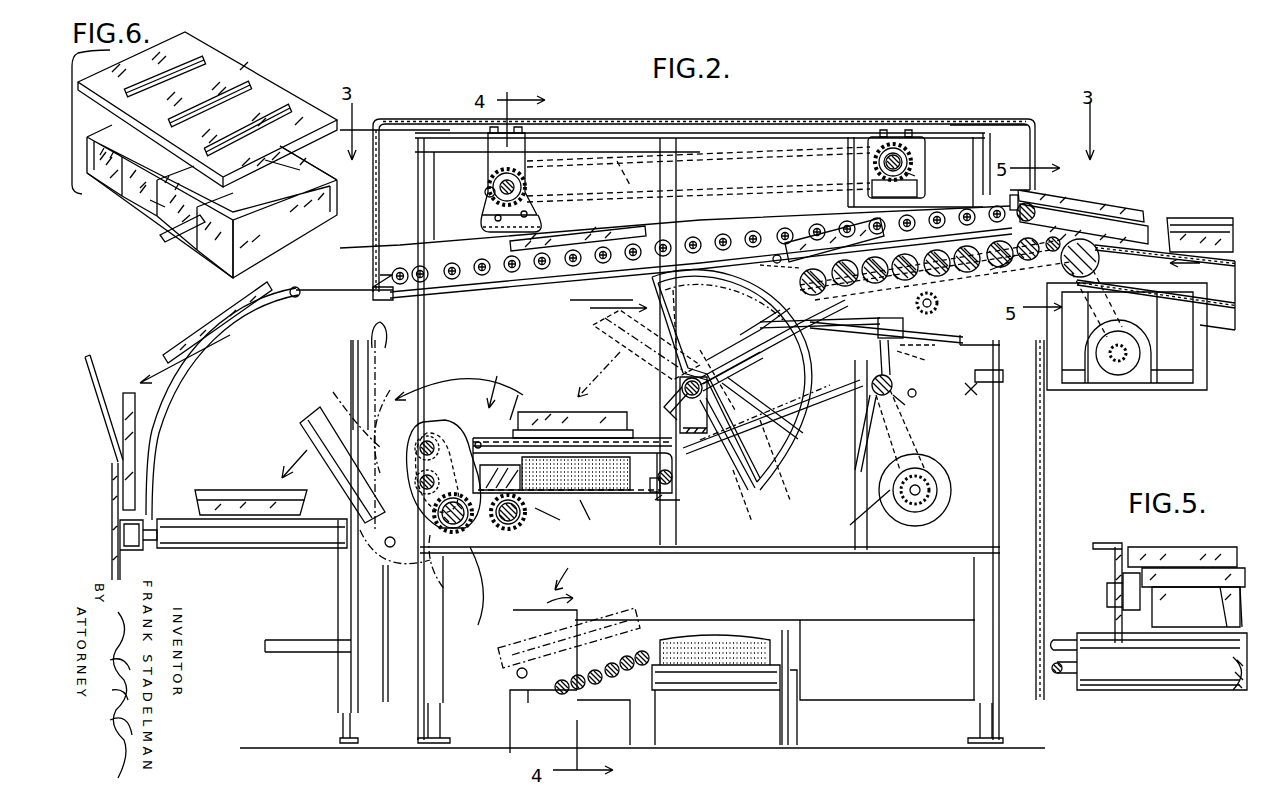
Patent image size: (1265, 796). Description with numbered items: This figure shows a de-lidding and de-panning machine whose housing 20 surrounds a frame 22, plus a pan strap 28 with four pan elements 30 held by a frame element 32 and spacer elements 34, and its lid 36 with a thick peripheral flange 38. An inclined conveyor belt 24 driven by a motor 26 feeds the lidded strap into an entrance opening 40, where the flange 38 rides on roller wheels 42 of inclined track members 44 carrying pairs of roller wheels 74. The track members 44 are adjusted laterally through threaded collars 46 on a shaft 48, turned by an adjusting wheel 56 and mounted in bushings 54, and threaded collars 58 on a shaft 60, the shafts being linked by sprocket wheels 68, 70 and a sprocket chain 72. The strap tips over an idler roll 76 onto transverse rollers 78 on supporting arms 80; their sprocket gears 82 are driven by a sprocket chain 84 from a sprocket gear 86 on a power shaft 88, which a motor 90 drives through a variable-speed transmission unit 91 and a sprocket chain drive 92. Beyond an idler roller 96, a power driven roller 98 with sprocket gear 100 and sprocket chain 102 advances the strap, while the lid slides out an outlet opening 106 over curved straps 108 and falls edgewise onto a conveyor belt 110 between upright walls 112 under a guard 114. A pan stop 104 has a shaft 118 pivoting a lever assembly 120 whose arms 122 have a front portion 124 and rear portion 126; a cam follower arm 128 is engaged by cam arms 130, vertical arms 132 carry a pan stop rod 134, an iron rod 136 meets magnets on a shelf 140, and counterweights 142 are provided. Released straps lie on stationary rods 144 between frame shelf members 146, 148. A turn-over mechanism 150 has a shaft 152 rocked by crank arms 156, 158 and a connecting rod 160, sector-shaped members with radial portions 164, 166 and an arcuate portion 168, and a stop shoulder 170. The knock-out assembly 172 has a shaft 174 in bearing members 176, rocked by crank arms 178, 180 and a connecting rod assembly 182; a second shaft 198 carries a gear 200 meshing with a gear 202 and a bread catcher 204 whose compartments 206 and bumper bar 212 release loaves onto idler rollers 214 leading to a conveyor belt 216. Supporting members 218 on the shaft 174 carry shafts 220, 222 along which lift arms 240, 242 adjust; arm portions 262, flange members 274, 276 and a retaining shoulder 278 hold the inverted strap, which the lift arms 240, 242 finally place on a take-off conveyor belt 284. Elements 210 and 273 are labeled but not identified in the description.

In FIG. 2, the housing 20 is at (402, 119).
In FIG. 2, the frame 22 is at (553, 140).
In FIG. 2, the conveyor belt 24 is at (1220, 313).
In FIG. 2, the motor 26 is at (1125, 367).
In FIG. 6, the pan strap 28 is at (184, 251).
In FIG. 2, the pan strap 28 is at (545, 412).
In FIG. 5, the pan strap 28 is at (1199, 613).
In FIG. 6, the pan elements 30 is at (280, 197).
In FIG. 5, the pan elements 30 is at (1237, 613).
In FIG. 6, the frame element 32 is at (250, 233).
In FIG. 5, the frame element 32 is at (1193, 577).
In FIG. 6, the spacer elements 34 is at (273, 193).
In FIG. 6, the lid 36 is at (263, 90).
In FIG. 2, the lid 36 is at (562, 242).
In FIG. 5, the lid 36 is at (1200, 547).
In FIG. 6, the peripheral flange 38 is at (315, 133).
In FIG. 2, the entrance opening 40 is at (1050, 193).
In FIG. 2, the roller wheels 42 is at (1010, 199).
In FIG. 5, the roller wheels 42 is at (1123, 577).
In FIG. 2, the track members 44 is at (397, 250).
In FIG. 5, the track members 44 is at (1108, 545).
In FIG. 2, the threaded collars 46 is at (868, 150).
In FIG. 2, the transverse supporting shaft 48 is at (908, 165).
In FIG. 2, the bushings 54 is at (897, 140).
In FIG. 2, the adjusting wheel 56 is at (868, 140).
In FIG. 2, the threaded collars 58 is at (490, 180).
In FIG. 2, the transverse supporting shaft 60 is at (524, 186).
In FIG. 2, the sprocket wheel 68 is at (912, 175).
In FIG. 2, the sprocket wheel 70 is at (486, 193).
In FIG. 2, the sprocket chain 72 is at (698, 174).
In FIG. 2, the roller wheels 74 is at (482, 276).
In FIG. 2, the transverse idler roll 76 is at (1050, 252).
In FIG. 5, the transverse idler roll 76 is at (1090, 633).
In FIG. 2, the transverse rollers 78 is at (1000, 267).
In FIG. 2, the supporting arms 80 is at (1020, 335).
In FIG. 2, the sprocket gear 82 is at (925, 238).
In FIG. 5, the sprocket gear 82 is at (1112, 690).
In FIG. 2, the feed roller 84 is at (953, 273).
In FIG. 2, the sprocket gear 86 is at (907, 408).
In FIG. 2, the power shaft 88 is at (900, 430).
In FIG. 2, the motor 90 is at (940, 478).
In FIG. 2, the variable-speed transmission unit 91 is at (917, 506).
In FIG. 2, the sprocket chain drive 92 is at (856, 507).
In FIG. 2, the transverse idler roller 96 is at (847, 278).
In FIG. 2, the power driven transverse roller 98 is at (800, 243).
In FIG. 2, the sprocket gear 100 is at (760, 290).
In FIG. 2, the sprocket chain 102 is at (773, 417).
In FIG. 2, the pan stop 104 is at (760, 265).
In FIG. 2, the outlet opening 106 is at (386, 274).
In FIG. 2, the curved straps 108 is at (297, 298).
In FIG. 2, the conveyor belt 110 is at (130, 522).
In FIG. 2, the upright supporting walls 112 is at (113, 470).
In FIG. 2, the guard 114 is at (105, 372).
In FIG. 2, the shaft 118 is at (807, 360).
In FIG. 2, the lever assembly 120 is at (975, 321).
In FIG. 2, the arms 122 is at (922, 350).
In FIG. 2, the front portion 124 is at (820, 332).
In FIG. 2, the rear portion 126 is at (965, 332).
In FIG. 2, the cam follower arm 128 is at (847, 433).
In FIG. 2, the cam arms 130 is at (891, 367).
In FIG. 2, the vertical arms 132 is at (760, 305).
In FIG. 2, the pan stop rod 134 is at (777, 255).
In FIG. 2, the iron rod 136 is at (1003, 375).
In FIG. 2, the shelf 140 is at (972, 390).
In FIG. 2, the counterweights 142 is at (909, 298).
In FIG. 2, the stationary rods 144 is at (740, 335).
In FIG. 2, the frame shelf member 146 is at (717, 455).
In FIG. 2, the frame shelf member 148 is at (892, 320).
In FIG. 2, the turn-over mechanism 150 is at (585, 326).
In FIG. 2, the transverse horizontal shaft 152 is at (706, 389).
In FIG. 2, the crank arm 156 is at (916, 395).
In FIG. 2, the crank arm 158 is at (727, 409).
In FIG. 2, the connecting rod 160 is at (762, 414).
In FIG. 2, the radial portion 164 is at (656, 313).
In FIG. 2, the radial portion 166 is at (730, 360).
In FIG. 2, the arcuate portion 168 is at (757, 395).
In FIG. 2, the stop shoulder 170 is at (640, 355).
In FIG. 2, the de-panning or knock-out assembly 172 is at (515, 373).
In FIG. 2, the transverse horizontal shaft 174 is at (405, 462).
In FIG. 2, the bearing members 176 is at (483, 553).
In FIG. 2, the crank arm 178 is at (402, 633).
In FIG. 2, the crank arm 180 is at (855, 460).
In FIG. 2, the connecting rod assembly 182 is at (605, 495).
In FIG. 2, the second horizontal transverse rotatable shaft 198 is at (560, 515).
In FIG. 2, the toothed gear 200 is at (468, 534).
In FIG. 2, the gear 202 is at (466, 589).
In FIG. 2, the bread catcher 204 is at (651, 543).
In FIG. 2, the compartments 206 is at (658, 495).
In FIG. 2, the gear 210 is at (515, 530).
In FIG. 2, the bumper bar 212 is at (690, 510).
In FIG. 2, the idler rollers 214 is at (612, 678).
In FIG. 2, the conveyor belt 216 is at (730, 690).
In FIG. 2, the supporting members 218 is at (438, 518).
In FIG. 2, the upper shaft 220 is at (343, 422).
In FIG. 2, the lower shaft 222 is at (356, 419).
In FIG. 2, the lift arm 240 is at (477, 442).
In FIG. 2, the lift arm 242 is at (370, 390).
In FIG. 2, the arm portions 262 is at (516, 396).
In FIG. 2, the pin 273 is at (684, 507).
In FIG. 2, the peripheral flange member 274 is at (480, 428).
In FIG. 2, the peripheral flange member 276 is at (352, 365).
In FIG. 2, the retaining shoulder 278 is at (669, 399).
In FIG. 2, the take-off conveyor belt 284 is at (255, 550).